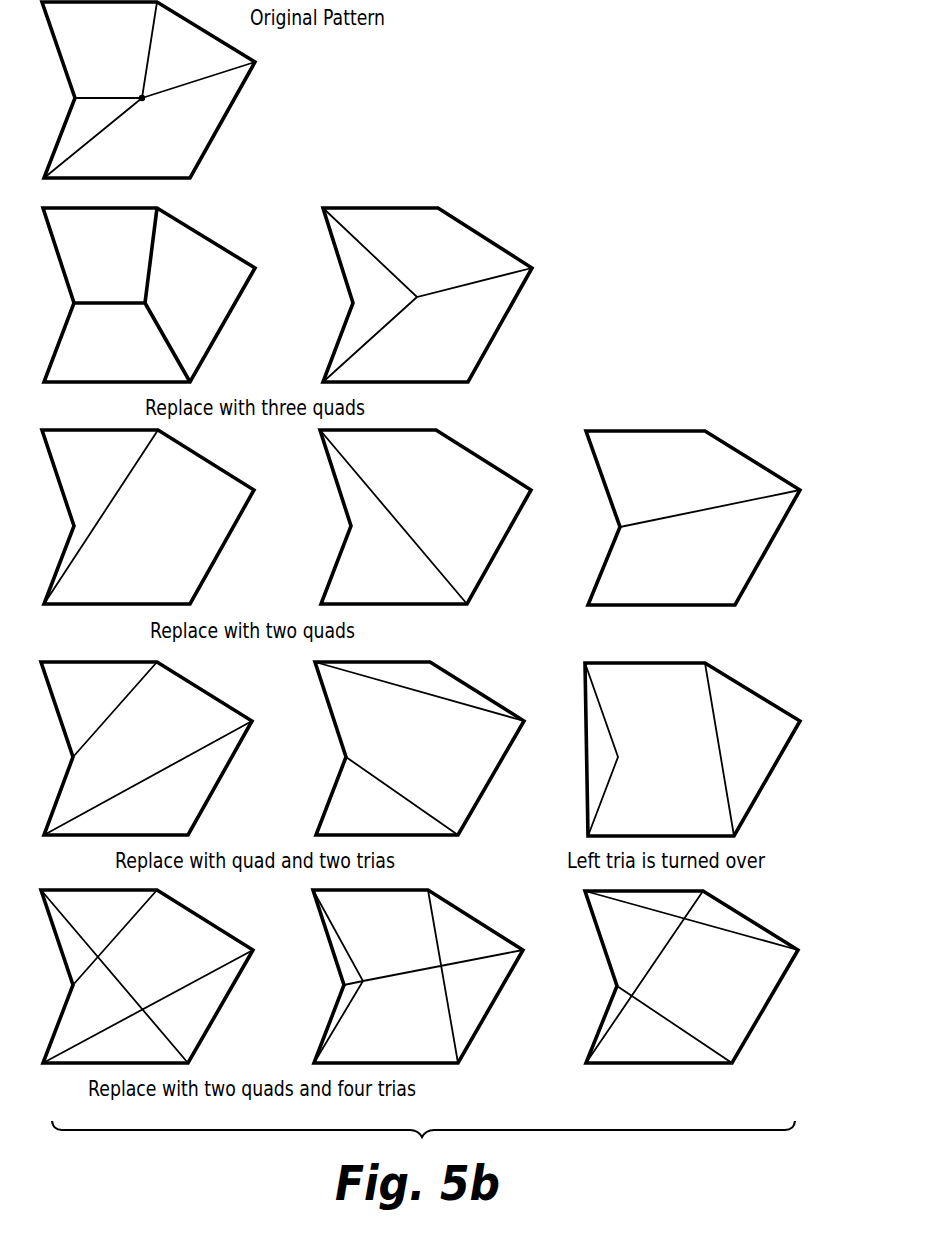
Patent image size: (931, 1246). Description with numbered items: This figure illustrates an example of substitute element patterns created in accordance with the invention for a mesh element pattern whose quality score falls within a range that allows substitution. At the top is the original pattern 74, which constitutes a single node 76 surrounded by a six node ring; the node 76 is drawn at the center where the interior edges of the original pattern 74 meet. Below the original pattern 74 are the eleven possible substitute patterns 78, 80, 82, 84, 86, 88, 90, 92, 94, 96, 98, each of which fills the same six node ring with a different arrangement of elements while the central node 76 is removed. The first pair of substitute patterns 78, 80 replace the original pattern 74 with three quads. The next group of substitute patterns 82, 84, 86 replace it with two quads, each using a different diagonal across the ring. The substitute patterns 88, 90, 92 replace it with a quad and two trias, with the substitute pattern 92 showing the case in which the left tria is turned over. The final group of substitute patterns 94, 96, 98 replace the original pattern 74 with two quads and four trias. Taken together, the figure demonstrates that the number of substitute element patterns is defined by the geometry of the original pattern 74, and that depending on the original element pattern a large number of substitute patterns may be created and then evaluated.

The original pattern 74 is at (230, 140).
The node 76 is at (147, 112).
The substitute pattern 78 is at (229, 345).
The substitute pattern 80 is at (506, 345).
The substitute pattern 82 is at (228, 567).
The substitute pattern 84 is at (492, 567).
The substitute pattern 86 is at (764, 567).
The substitute pattern 88 is at (228, 798).
The substitute pattern 90 is at (488, 798).
The substitute pattern 92 is at (764, 798).
The substitute pattern 94 is at (228, 1026).
The substitute pattern 96 is at (488, 1026).
The substitute pattern 98 is at (762, 1026).